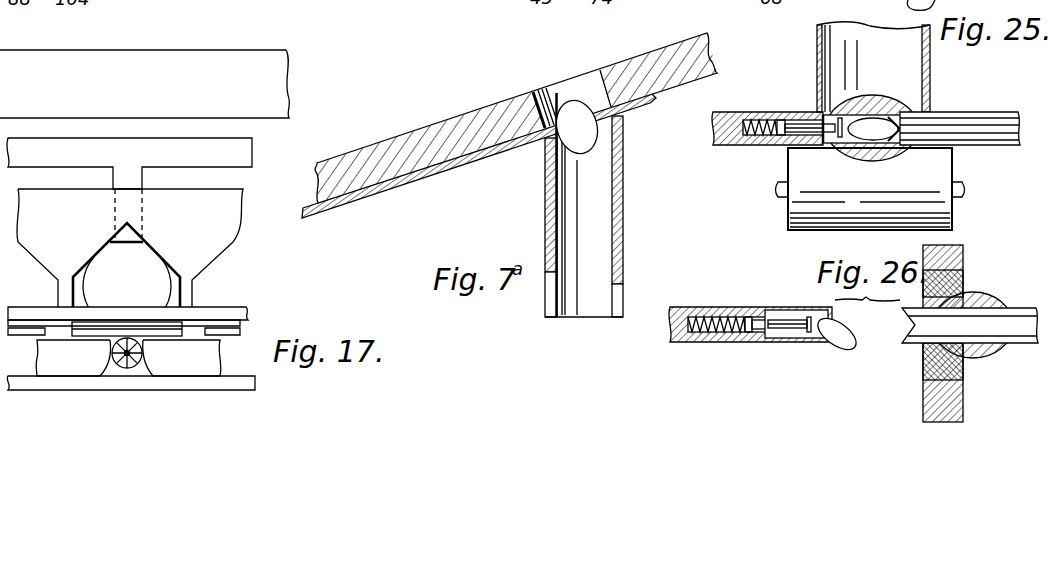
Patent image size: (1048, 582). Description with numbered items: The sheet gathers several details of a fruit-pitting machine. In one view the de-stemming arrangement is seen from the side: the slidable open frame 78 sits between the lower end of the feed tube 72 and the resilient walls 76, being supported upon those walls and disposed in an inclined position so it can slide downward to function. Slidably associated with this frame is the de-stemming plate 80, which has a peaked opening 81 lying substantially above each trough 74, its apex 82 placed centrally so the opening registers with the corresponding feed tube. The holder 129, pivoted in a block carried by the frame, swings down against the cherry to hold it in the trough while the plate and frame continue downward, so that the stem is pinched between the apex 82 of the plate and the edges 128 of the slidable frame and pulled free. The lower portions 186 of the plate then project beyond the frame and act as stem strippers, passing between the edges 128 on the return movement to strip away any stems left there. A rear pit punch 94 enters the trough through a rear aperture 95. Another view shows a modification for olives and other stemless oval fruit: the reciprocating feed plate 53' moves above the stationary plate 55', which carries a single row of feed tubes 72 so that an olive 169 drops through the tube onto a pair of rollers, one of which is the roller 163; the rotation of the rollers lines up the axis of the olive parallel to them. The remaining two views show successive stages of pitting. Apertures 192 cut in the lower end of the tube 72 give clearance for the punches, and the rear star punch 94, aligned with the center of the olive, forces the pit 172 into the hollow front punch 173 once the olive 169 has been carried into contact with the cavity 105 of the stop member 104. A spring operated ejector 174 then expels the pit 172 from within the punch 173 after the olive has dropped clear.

In FIG. 17, the slidable open frame 78 is at (255, 55).
In FIG. 17, the holder 129 is at (243, 151).
In FIG. 17, the de-stemming plate 80 is at (225, 208).
In FIG. 17, the peaked opening 81 is at (98, 258).
In FIG. 17, the apex 82 is at (137, 236).
In FIG. 17, the edges of the slidable frame 128 is at (240, 332).
In FIG. 17, the stem stripper portions 186 is at (163, 333).
In FIG. 17, the resilient walls 76 is at (160, 365).
In FIG. 17, the rear apertures 95 is at (113, 367).
In FIG. 17, the rear pit punch 94 is at (133, 370).
In FIG. 25, the rear pit punch 94 is at (980, 110).
In FIG. 26, the rear pit punch 94 is at (1027, 308).
In FIG. 17, the troughs 74 is at (142, 367).
In FIG. 7A, the feed plate 53' is at (516, 118).
In FIG. 7A, the stationary plate 55' is at (479, 167).
In FIG. 7A, the feed tube 72 is at (625, 223).
In FIG. 25, the feed tube 72 is at (817, 53).
In FIG. 7A, the olive 169 is at (577, 118).
In FIG. 25, the olive 169 is at (877, 100).
In FIG. 26, the olive 169 is at (977, 292).
In FIG. 25, the spring operated ejector 174 is at (828, 140).
In FIG. 26, the spring operated ejector 174 is at (788, 325).
In FIG. 25, the cut-away portions or apertures 192 is at (930, 110).
In FIG. 25, the hollow front punch 173 is at (845, 114).
In FIG. 26, the hollow front punch 173 is at (785, 310).
In FIG. 25, the pit 172 is at (877, 135).
In FIG. 26, the pit 172 is at (845, 345).
In FIG. 25, the roller 163 is at (952, 163).
In FIG. 26, the stop member 104 is at (963, 405).
In FIG. 26, the cavity 105 is at (988, 358).